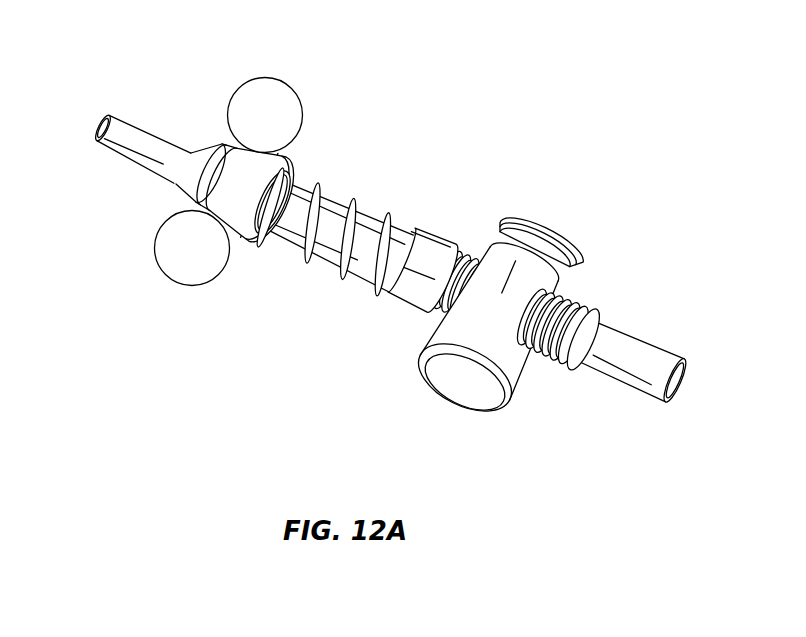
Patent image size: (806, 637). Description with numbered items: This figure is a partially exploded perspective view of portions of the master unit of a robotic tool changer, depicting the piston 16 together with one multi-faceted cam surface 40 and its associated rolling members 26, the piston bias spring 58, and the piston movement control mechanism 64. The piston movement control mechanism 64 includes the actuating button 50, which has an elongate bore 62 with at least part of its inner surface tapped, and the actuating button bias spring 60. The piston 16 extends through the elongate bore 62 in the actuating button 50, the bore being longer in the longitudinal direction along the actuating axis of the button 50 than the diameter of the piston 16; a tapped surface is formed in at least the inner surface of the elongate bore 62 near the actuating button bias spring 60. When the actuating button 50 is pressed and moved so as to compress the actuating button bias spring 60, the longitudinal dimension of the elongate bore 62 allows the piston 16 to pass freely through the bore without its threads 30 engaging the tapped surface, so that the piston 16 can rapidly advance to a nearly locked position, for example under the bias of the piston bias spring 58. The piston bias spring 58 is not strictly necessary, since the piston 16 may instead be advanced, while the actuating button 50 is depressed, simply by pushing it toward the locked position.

The piston 16 is at (438, 259).
The rolling members 26 is at (251, 128).
The threads 30 is at (601, 359).
The multi-faceted cam surface 40 is at (205, 137).
The actuating button 50 is at (458, 390).
The piston bias spring 58 is at (352, 198).
The actuating button bias spring 60 is at (543, 228).
The elongate bore 62 is at (534, 362).
The piston movement control mechanism 64 is at (525, 204).